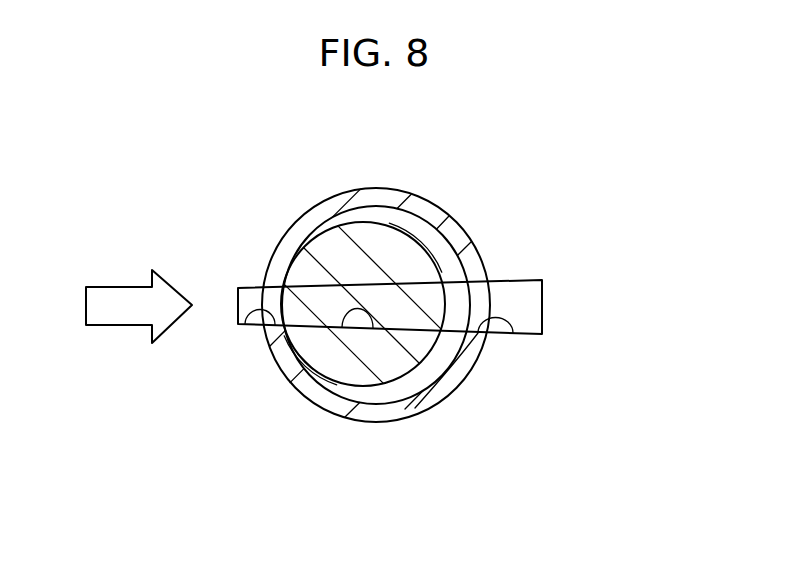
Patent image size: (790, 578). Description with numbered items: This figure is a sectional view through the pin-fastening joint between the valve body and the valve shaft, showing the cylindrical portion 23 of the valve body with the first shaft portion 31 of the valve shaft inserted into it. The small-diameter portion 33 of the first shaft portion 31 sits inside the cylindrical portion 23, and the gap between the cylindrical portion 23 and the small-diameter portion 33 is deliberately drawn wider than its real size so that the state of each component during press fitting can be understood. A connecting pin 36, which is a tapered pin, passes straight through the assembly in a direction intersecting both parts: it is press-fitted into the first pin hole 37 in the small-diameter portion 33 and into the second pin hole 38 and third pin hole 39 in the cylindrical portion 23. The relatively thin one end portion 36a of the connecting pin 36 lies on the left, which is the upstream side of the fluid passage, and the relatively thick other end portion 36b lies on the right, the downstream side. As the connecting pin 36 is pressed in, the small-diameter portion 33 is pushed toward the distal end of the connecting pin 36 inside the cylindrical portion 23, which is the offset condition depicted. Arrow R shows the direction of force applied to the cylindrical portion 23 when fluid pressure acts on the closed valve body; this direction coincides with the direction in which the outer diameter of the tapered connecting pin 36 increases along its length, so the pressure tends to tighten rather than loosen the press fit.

The cylindrical portion 23 is at (385, 187).
The first shaft portion 31 is at (420, 376).
The small-diameter portion 33 is at (402, 380).
The connecting pin 36 is at (543, 302).
The one end portion 36a is at (248, 300).
The other end portion 36b is at (522, 292).
The first pin hole 37 is at (342, 327).
The second pin hole 38 is at (513, 333).
The third pin hole 39 is at (245, 324).
The arrow R is at (118, 287).